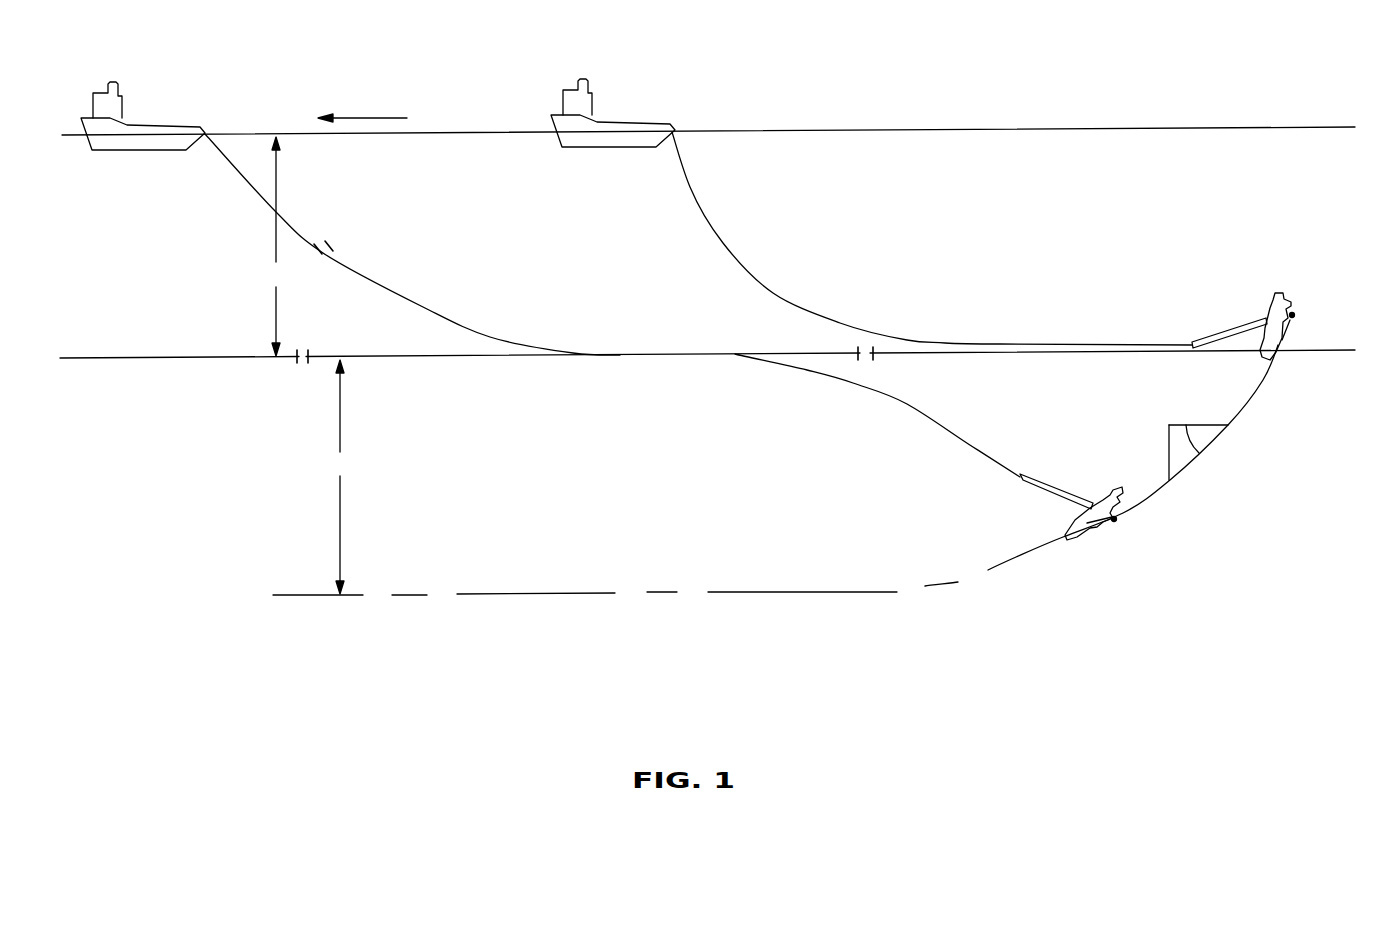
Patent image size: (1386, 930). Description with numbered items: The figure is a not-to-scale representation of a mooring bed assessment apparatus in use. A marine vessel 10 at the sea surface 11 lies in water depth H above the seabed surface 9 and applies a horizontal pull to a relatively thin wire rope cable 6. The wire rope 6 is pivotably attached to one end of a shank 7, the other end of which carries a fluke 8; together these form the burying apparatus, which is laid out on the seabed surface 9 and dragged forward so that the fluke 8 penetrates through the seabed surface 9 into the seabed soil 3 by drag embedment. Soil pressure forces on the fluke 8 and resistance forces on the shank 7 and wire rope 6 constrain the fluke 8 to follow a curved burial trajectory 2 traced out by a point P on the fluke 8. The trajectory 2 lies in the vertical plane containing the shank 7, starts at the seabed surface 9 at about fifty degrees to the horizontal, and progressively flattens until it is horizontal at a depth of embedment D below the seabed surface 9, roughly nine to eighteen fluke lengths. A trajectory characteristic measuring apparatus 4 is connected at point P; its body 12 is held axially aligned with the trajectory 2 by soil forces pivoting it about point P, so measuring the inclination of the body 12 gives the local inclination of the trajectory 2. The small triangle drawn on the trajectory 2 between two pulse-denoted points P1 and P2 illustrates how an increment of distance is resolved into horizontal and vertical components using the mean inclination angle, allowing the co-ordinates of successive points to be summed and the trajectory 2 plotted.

The burial trajectory 2 is at (811, 592).
The seabed soil 3 is at (529, 468).
The trajectory characteristic measuring apparatus 4 is at (1292, 315).
The wire rope cable 6 is at (906, 402).
The shank 7 is at (1256, 318).
The fluke 8 is at (1277, 291).
The seabed surface 9 is at (814, 352).
The marine vessel 10 is at (120, 127).
The sea surface 11 is at (984, 129).
The body 12 is at (1287, 333).
The point P is at (1284, 344).
The first pulse-denoted point P1 is at (1219, 426).
The second pulse-denoted point P2 is at (1183, 467).
The water depth H is at (277, 246).
The depth of embedment D is at (340, 477).